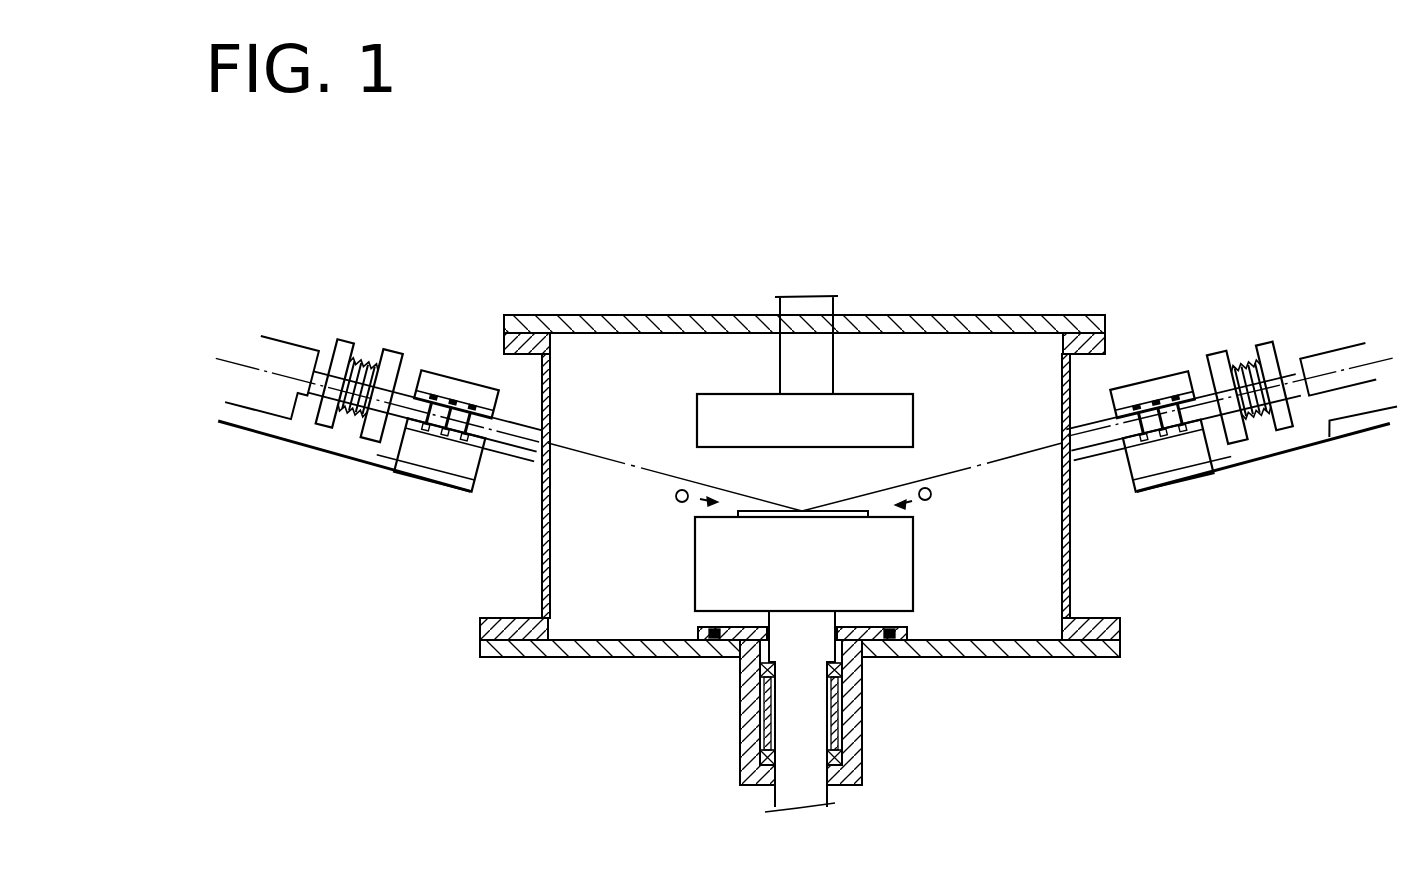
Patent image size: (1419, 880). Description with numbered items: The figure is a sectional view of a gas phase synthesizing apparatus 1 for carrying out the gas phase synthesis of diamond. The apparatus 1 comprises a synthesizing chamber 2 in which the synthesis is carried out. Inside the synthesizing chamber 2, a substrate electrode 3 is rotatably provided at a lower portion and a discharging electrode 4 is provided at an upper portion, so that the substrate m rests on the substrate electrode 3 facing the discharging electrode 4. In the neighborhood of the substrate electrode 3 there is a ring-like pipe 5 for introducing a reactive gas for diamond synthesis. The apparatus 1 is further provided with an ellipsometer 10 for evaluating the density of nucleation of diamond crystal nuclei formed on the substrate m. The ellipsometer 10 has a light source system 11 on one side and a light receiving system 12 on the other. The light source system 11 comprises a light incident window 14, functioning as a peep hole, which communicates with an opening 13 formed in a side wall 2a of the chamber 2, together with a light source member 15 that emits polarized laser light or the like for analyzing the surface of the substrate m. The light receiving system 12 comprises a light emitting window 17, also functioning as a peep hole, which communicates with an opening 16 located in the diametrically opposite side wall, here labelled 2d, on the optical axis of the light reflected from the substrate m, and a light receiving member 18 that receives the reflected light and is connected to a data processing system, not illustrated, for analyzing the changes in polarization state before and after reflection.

The gas phase synthesizing apparatus 1 is at (1037, 300).
The synthesizing chamber 2 is at (902, 322).
The side wall 2a is at (541, 390).
The right chamber wall port 2d is at (1072, 572).
The substrate electrode 3 is at (893, 567).
The discharging electrode 4 is at (897, 420).
The ring-like pipe 5 is at (676, 497).
The ellipsometer 10 is at (300, 235).
The light source system 11 is at (317, 298).
The light receiving system 12 is at (1304, 296).
The opening 13 is at (552, 436).
The light incident window 14 is at (345, 342).
The light source member 15 is at (289, 353).
The opening 16 is at (1062, 437).
The light emitting window 17 is at (1262, 342).
The light receiving member 18 is at (1327, 358).
The substrate m is at (835, 510).